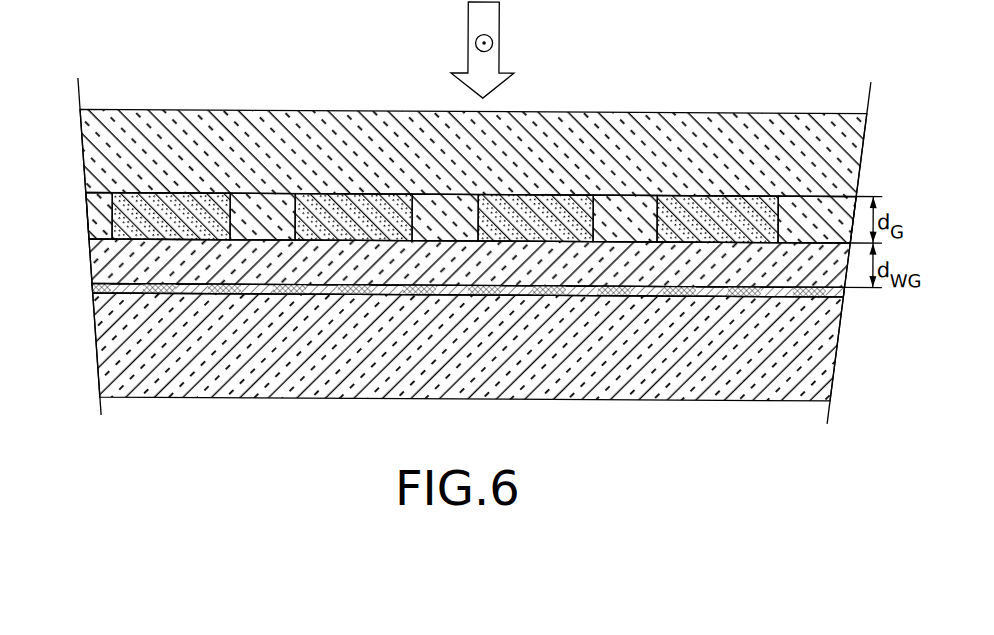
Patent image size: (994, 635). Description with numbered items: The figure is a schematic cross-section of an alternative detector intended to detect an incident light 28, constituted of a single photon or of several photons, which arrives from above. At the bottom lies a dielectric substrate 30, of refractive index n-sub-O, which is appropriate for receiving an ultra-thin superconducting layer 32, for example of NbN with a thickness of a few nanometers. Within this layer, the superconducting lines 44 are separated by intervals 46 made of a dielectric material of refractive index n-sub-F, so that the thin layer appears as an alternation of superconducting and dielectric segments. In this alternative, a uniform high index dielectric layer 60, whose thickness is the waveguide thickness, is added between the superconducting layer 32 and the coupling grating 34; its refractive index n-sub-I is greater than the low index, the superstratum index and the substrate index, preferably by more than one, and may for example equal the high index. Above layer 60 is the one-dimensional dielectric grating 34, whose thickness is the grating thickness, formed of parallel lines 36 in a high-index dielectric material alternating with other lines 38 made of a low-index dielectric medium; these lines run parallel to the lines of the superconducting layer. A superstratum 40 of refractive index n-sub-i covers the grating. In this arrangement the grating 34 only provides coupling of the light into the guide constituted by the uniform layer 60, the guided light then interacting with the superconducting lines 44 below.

The incident light 28 is at (467, 15).
The dielectric substrate 30 is at (100, 353).
The superconducting layer 32 is at (427, 277).
The dielectric grating 34 is at (357, 186).
The parallel lines 36 is at (572, 207).
The other lines 38 is at (622, 220).
The superstratum 40 is at (87, 160).
The superconducting lines 44 is at (327, 291).
The intervals 46 is at (420, 291).
The uniform high index dielectric layer 60 is at (93, 252).